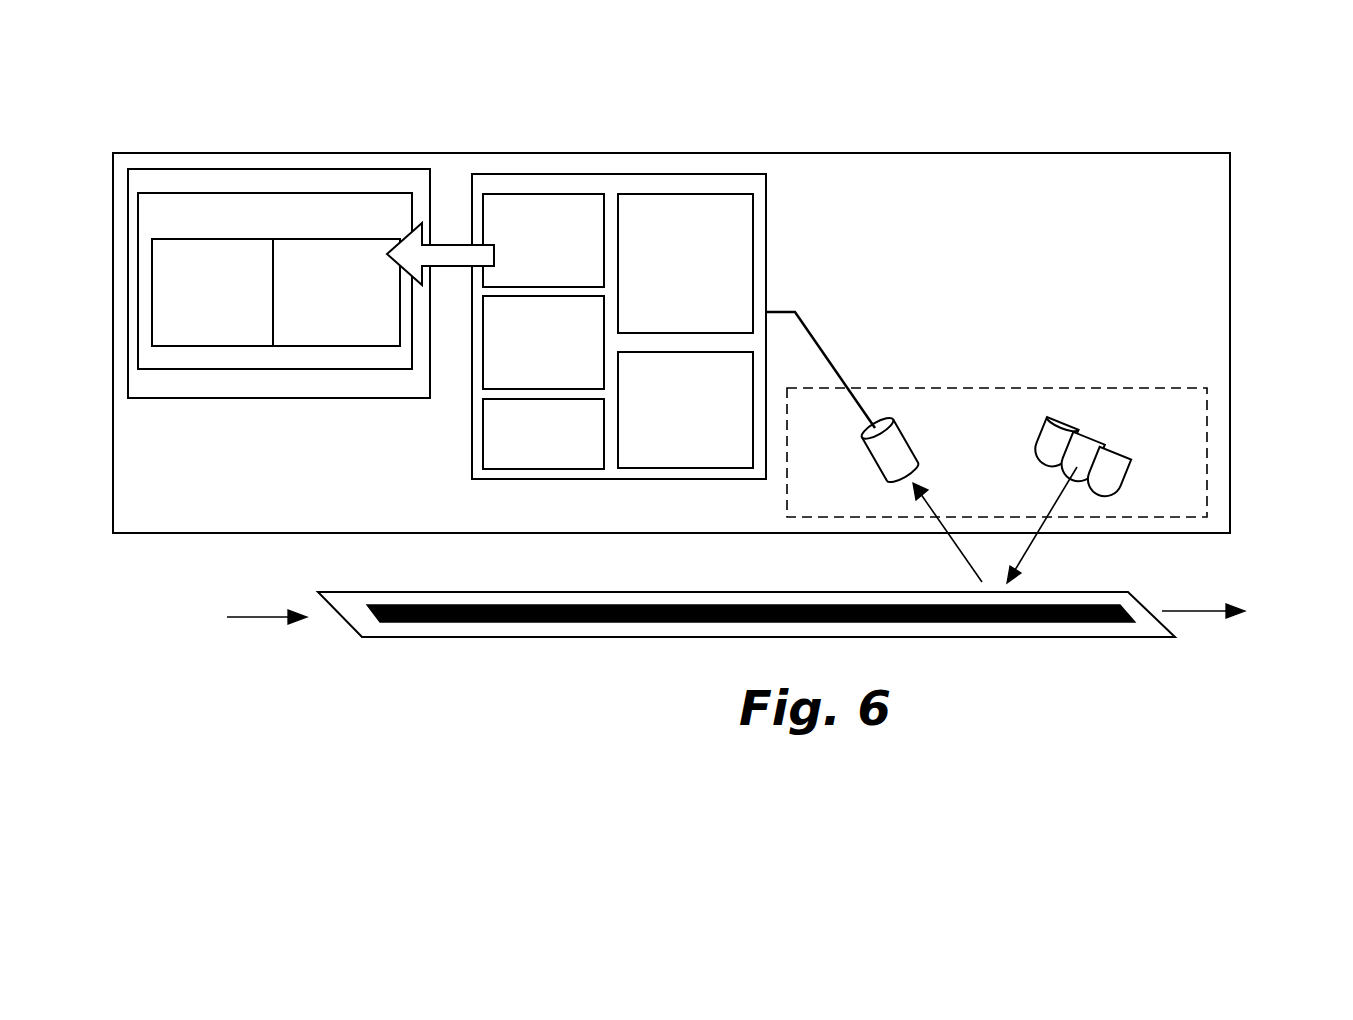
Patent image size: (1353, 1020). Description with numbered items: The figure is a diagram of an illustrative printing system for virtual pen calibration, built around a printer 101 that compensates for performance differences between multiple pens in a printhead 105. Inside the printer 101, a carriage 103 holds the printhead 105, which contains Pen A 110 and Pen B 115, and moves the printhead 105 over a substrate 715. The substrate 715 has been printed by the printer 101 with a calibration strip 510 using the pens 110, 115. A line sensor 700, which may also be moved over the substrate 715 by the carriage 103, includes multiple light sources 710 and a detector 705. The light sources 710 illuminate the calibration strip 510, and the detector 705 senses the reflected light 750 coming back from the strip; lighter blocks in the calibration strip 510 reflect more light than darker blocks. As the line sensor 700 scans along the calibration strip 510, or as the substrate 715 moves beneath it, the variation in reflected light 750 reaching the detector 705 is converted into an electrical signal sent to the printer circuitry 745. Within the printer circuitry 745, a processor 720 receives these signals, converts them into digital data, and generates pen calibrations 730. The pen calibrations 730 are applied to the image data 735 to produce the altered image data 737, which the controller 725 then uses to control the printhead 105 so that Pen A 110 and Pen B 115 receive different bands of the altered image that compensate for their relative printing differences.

The printer 101 is at (1208, 152).
The carriage 103 is at (374, 397).
The printhead 105 is at (345, 197).
The Pen A 110 is at (212, 292).
The Pen B 115 is at (336, 292).
The printer circuitry 745 is at (600, 183).
The controller 725 is at (526, 262).
The processor 720 is at (667, 276).
The altered image data 737 is at (526, 381).
The image data 735 is at (526, 457).
The pen calibrations 730 is at (667, 442).
The line sensor 700 is at (1202, 398).
The detector 705 is at (876, 428).
The light sources 710 is at (1065, 417).
The reflected light 750 is at (960, 552).
The substrate 715 is at (340, 592).
The calibration strip 510 is at (578, 608).